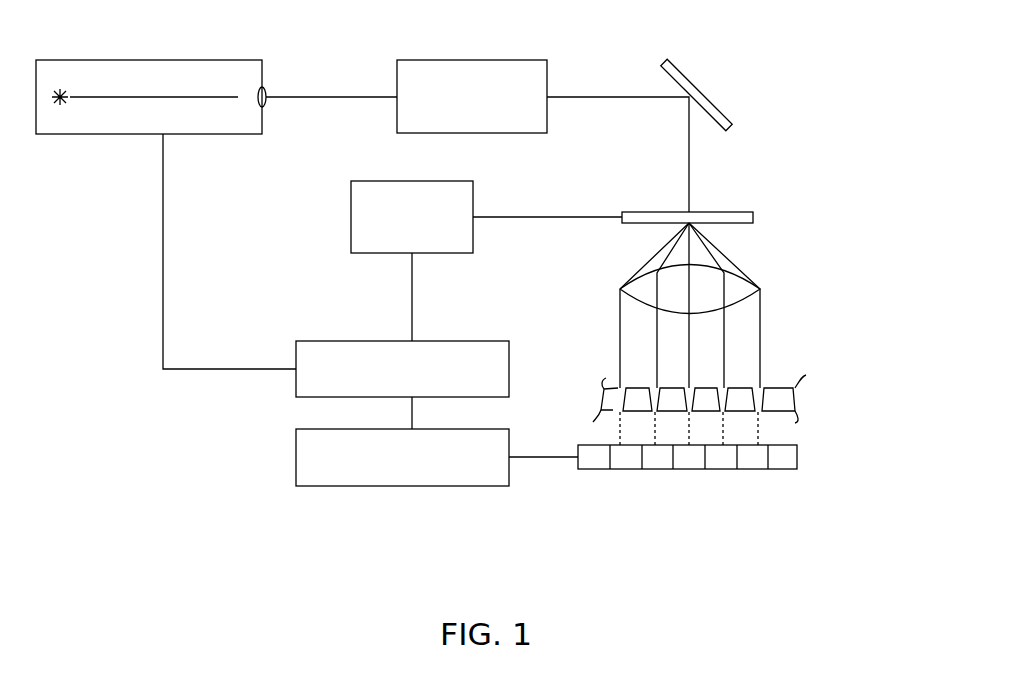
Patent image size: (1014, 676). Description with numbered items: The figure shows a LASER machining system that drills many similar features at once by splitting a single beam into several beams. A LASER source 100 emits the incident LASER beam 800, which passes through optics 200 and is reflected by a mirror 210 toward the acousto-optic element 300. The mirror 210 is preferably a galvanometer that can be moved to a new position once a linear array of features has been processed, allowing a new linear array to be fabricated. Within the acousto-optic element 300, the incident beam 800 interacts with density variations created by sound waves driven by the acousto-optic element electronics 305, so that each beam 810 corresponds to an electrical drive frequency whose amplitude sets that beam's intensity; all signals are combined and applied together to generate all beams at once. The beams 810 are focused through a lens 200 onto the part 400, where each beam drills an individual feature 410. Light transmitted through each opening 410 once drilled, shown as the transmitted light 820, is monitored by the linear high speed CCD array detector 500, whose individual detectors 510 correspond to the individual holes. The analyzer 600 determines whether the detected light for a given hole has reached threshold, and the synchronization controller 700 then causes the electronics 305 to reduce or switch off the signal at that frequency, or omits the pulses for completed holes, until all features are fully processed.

The laser 100 is at (85, 134).
The optics / lens 200 is at (475, 133).
The mirror 210 is at (685, 73).
The acousto-optic element 300 is at (753, 217).
The acousto-optic element electronics 305 is at (475, 253).
The part 400 is at (797, 398).
The feature 410 is at (617, 388).
The array detector 500 is at (780, 469).
The detector 510 is at (658, 469).
The analyzer 600 is at (296, 455).
The synchronization controller 700 is at (313, 340).
The incident LASER beam 800 is at (322, 97).
The beam 810 is at (724, 362).
The detector outputs 820 is at (757, 444).